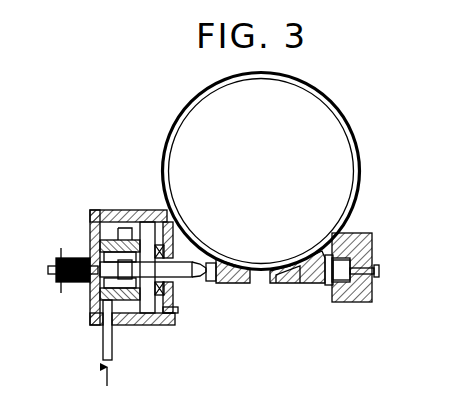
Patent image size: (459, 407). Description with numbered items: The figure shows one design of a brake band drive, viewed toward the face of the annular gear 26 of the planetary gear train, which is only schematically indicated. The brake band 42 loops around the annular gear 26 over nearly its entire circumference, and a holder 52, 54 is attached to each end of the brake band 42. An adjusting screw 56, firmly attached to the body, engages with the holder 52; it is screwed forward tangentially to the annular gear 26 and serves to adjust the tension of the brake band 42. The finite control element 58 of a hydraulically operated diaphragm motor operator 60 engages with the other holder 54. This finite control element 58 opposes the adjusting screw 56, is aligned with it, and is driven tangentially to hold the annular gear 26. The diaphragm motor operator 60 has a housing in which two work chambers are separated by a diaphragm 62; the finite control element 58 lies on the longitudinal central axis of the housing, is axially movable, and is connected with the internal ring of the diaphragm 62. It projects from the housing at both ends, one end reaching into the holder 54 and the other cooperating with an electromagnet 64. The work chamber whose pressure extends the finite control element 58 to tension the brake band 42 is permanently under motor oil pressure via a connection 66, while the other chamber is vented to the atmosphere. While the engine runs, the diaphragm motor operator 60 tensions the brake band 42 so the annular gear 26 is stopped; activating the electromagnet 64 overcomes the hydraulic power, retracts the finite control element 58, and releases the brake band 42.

The annular gear 26 is at (341, 150).
The brake band 42 is at (327, 97).
The holder 52 is at (271, 282).
The holder 54 is at (220, 281).
The adjusting screw 56 is at (378, 265).
The finite control element 58 is at (183, 275).
The diaphragm motor operator 60 is at (109, 198).
The diaphragm 62 is at (133, 230).
The electromagnet 64 is at (78, 258).
The connection 66 is at (103, 346).